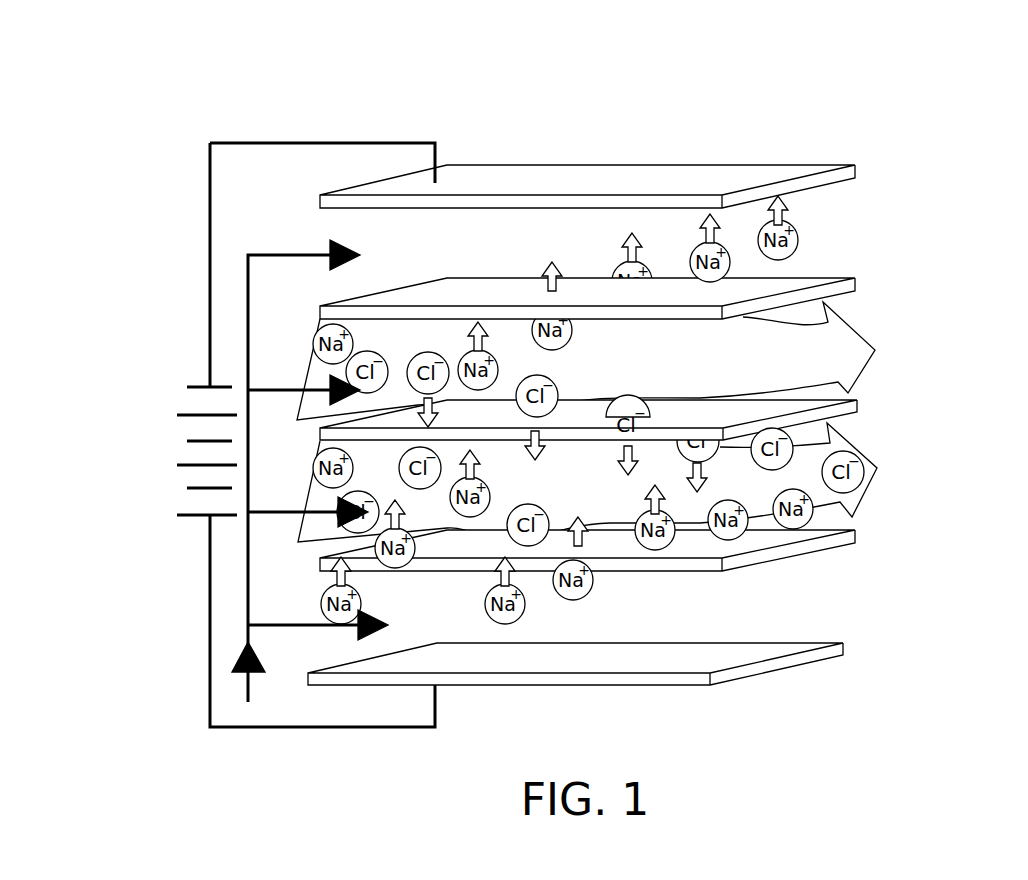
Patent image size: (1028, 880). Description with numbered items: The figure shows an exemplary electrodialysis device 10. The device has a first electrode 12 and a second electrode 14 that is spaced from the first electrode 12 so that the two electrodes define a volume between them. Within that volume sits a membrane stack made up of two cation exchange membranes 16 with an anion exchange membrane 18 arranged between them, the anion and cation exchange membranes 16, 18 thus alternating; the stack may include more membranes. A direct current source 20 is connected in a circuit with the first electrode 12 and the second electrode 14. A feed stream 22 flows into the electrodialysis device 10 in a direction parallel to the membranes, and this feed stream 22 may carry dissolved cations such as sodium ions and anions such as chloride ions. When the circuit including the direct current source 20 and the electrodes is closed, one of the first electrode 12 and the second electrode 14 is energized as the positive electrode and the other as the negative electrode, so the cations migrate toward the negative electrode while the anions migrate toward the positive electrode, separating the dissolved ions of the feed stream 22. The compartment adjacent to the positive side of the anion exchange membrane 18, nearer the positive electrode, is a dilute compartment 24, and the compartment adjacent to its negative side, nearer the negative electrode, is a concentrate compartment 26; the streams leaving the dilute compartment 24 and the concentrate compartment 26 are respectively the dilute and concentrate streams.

The electrodialysis device 10 is at (150, 126).
The first electrode 12 is at (843, 653).
The second electrode 14 is at (835, 177).
The cation exchange membrane 16 is at (843, 289).
The anion exchange membrane 18 is at (845, 412).
The direct current source 20 is at (190, 450).
The feed stream 22 is at (310, 481).
The dilute compartment 24 is at (843, 350).
The concentrate compartment 26 is at (876, 468).